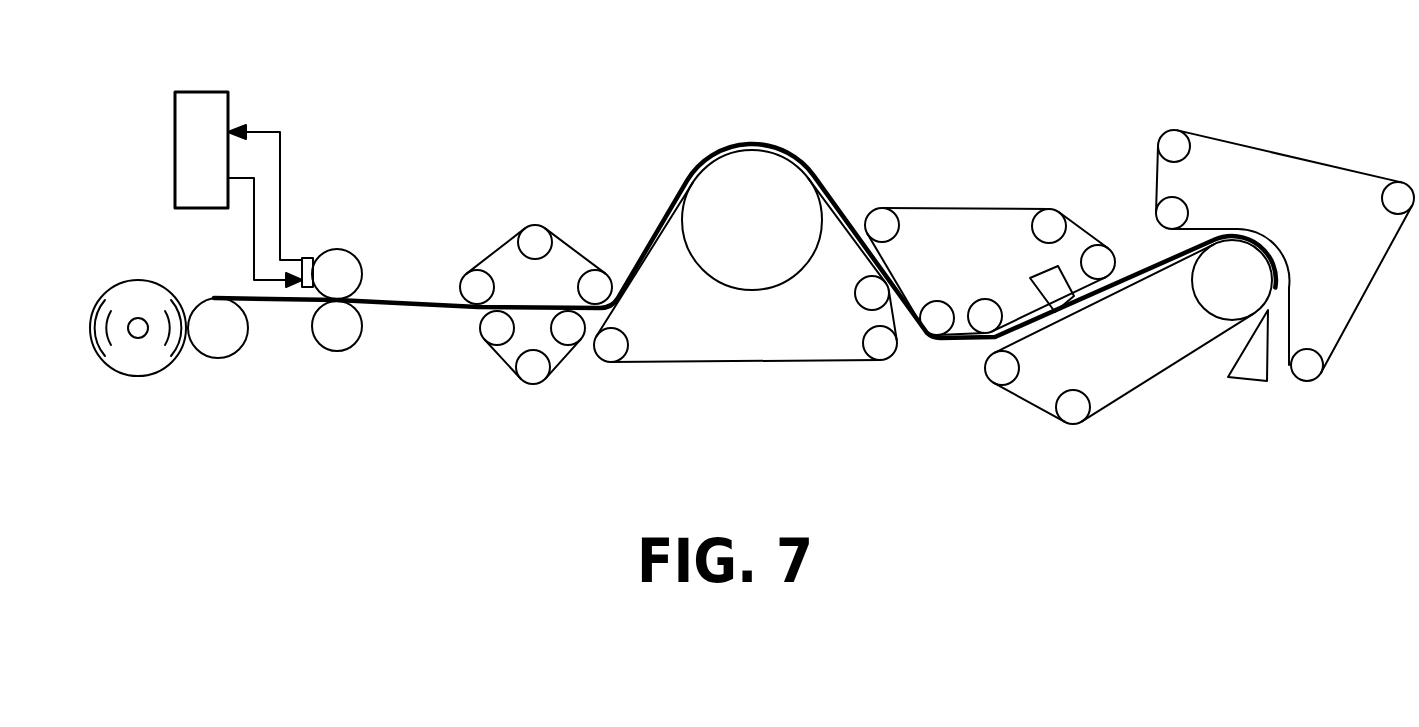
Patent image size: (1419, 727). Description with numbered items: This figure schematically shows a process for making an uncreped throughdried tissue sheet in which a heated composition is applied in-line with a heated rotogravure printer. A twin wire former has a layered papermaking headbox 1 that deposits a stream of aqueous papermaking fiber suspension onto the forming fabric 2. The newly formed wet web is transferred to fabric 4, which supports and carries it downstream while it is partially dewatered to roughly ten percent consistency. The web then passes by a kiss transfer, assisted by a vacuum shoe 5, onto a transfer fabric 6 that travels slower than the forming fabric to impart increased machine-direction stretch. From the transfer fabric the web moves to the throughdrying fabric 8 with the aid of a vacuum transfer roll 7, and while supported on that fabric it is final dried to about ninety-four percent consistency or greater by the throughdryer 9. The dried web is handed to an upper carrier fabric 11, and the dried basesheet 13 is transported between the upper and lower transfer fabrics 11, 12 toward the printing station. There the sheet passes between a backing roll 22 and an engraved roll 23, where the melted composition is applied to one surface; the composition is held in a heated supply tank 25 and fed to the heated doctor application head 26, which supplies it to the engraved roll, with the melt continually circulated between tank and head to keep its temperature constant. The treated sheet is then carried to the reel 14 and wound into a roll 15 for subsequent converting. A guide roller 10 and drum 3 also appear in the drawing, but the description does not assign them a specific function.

The layered papermaking headbox 1 is at (1271, 382).
The forming fabric 2 is at (1312, 160).
The pressure drum 3 is at (1192, 300).
The fabric 4 is at (1132, 400).
The vacuum shoe 5 is at (1031, 275).
The transfer fabric 6 is at (937, 208).
The vacuum transfer roll 7 is at (855, 291).
The throughdrying fabric 8 is at (757, 365).
The throughdryer 9 is at (760, 237).
The guide roller 10 is at (600, 283).
The upper carrier fabric 11 is at (498, 242).
The lower transfer fabric 12 is at (557, 363).
The dried basesheet 13 is at (413, 300).
The reel 14 is at (203, 353).
The roll 15 is at (97, 358).
The backing roll 22 is at (345, 350).
The engraved roll 23 is at (343, 250).
The heated supply tank 25 is at (175, 136).
The heated doctor application head 26 is at (306, 257).